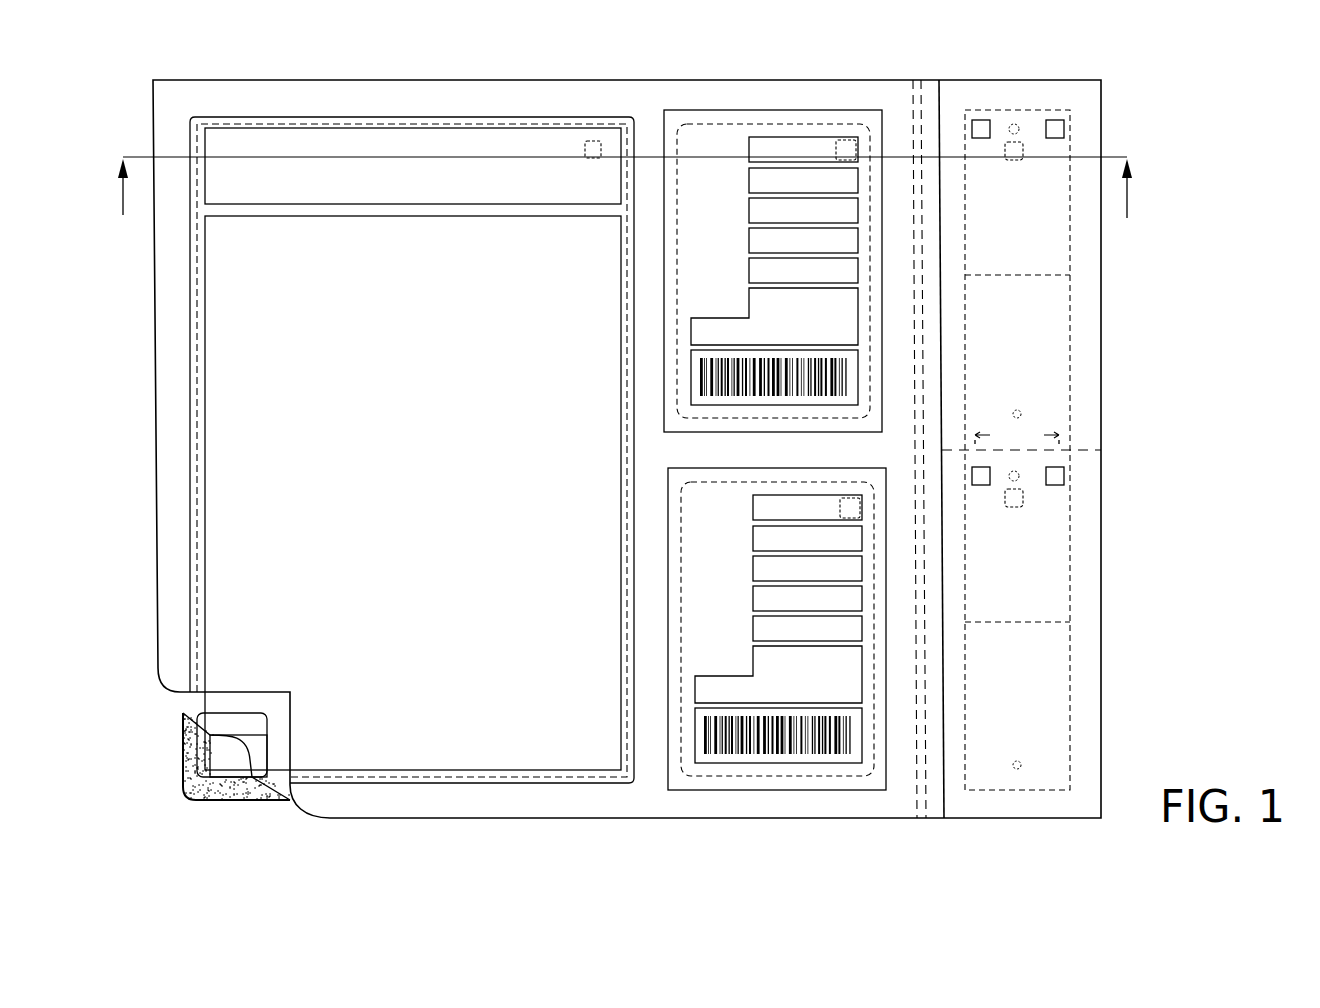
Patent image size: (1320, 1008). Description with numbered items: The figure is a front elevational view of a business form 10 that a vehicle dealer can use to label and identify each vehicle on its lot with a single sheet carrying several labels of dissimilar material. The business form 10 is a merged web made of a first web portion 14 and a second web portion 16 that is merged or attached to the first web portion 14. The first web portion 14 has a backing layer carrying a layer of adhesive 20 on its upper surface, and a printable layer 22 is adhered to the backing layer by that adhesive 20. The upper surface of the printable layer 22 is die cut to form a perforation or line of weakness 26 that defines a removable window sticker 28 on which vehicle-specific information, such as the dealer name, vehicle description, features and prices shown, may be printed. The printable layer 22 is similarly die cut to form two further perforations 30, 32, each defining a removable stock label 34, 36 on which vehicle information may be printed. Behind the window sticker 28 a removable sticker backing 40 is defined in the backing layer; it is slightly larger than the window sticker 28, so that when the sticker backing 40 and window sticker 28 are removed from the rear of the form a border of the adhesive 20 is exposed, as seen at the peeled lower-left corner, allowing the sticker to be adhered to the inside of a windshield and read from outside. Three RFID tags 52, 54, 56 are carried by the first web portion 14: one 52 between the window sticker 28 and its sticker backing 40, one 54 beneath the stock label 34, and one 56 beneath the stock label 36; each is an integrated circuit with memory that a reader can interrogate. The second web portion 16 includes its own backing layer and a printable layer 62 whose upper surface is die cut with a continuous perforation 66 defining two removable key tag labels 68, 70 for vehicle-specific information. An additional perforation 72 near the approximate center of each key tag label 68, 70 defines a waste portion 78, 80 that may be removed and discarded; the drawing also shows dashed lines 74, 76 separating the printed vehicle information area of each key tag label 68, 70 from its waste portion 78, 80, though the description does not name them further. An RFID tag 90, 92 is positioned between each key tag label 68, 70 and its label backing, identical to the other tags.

The business form 10 is at (672, 52).
The first web portion 14 is at (486, 66).
The second web portion 16 is at (1032, 66).
The adhesive 20 is at (195, 742).
The printable layer 22 is at (640, 102).
The perforation or line of weakness 26 is at (400, 123).
The window sticker 28 is at (330, 143).
The perforation or line of weakness 30 is at (770, 118).
The perforation or line of weakness 32 is at (786, 478).
The stock label 34 is at (725, 135).
The stock label 36 is at (735, 494).
The sticker backing 40 is at (190, 800).
The RFID tag 52 is at (588, 141).
The RFID tag 54 is at (847, 140).
The RFID tag 56 is at (844, 497).
The printable layer 62 is at (1080, 92).
The perforation or line of weakness 66 is at (957, 145).
The key tag label 68 is at (1062, 240).
The key tag label 70 is at (1055, 545).
The perforation or line of weakness 72 is at (1060, 450).
The fold line 74 is at (1050, 276).
The fold line 76 is at (1055, 622).
The waste portion 78 is at (1055, 325).
The waste portion 80 is at (1058, 672).
The RFID tag 90 is at (1010, 144).
The RFID tag 92 is at (1025, 503).